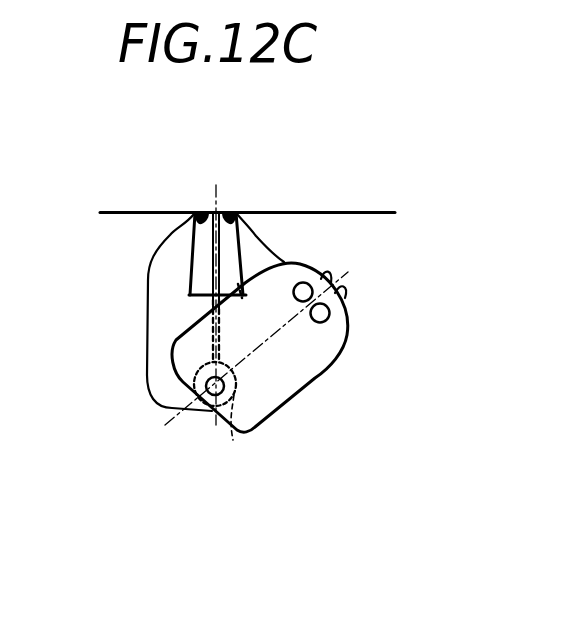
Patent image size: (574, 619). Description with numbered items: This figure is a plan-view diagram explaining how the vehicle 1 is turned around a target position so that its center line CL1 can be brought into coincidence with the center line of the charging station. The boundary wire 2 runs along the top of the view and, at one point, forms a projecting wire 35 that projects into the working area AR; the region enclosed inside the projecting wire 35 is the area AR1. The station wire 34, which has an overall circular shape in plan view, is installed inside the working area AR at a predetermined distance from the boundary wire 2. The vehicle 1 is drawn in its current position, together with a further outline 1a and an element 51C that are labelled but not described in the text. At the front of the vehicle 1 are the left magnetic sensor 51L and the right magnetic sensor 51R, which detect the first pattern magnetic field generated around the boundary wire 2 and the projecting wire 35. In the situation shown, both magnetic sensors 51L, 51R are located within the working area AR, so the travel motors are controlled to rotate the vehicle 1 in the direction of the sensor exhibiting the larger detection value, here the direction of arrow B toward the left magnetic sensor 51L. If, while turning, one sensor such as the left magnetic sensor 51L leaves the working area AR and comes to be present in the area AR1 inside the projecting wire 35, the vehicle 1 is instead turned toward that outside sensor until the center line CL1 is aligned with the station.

The vehicle 1 is at (268, 418).
The head outline in retracted position 1a is at (148, 305).
The boundary wire 2 is at (128, 211).
The station wire 34 is at (233, 441).
The projecting wire 35 is at (189, 260).
The left front magnetic sensor 51L is at (302, 282).
The right front magnetic sensor 51R is at (330, 318).
The center blade 51C is at (207, 389).
The area inside the projecting wire AR1 is at (198, 211).
The working area AR is at (404, 244).
The arrow B is at (156, 306).
The center line of the vehicle CL1 is at (238, 362).